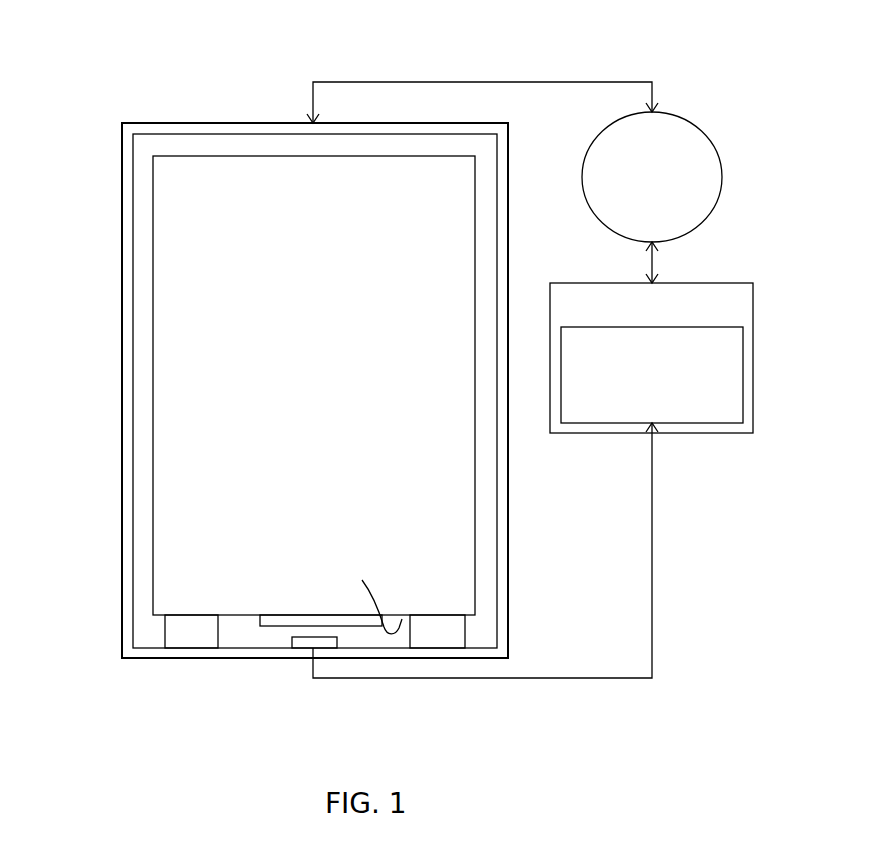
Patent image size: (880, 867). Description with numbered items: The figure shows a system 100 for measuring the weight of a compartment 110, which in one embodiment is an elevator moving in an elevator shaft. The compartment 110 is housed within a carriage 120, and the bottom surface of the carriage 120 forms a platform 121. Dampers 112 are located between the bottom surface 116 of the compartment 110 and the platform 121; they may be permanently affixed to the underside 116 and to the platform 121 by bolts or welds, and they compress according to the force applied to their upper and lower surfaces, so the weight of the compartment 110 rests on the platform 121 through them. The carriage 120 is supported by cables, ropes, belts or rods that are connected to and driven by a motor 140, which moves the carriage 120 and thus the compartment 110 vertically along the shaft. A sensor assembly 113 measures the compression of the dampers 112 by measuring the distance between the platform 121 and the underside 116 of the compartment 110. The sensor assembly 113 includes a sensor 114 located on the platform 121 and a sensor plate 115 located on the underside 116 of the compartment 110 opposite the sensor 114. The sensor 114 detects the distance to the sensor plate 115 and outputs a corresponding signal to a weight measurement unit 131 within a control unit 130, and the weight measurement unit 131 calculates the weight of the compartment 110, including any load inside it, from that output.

The system 100 is at (125, 49).
The compartment 110 is at (147, 297).
The dampers 112 is at (190, 638).
The sensor assembly 113 is at (305, 603).
The sensor 114 is at (307, 650).
The sensor plate 115 is at (272, 618).
The bottom surface 116 is at (367, 592).
The carriage 120 is at (110, 212).
The platform 121 is at (143, 645).
The control unit 130 is at (605, 283).
The weight measurement unit 131 is at (612, 423).
The motor 140 is at (692, 127).